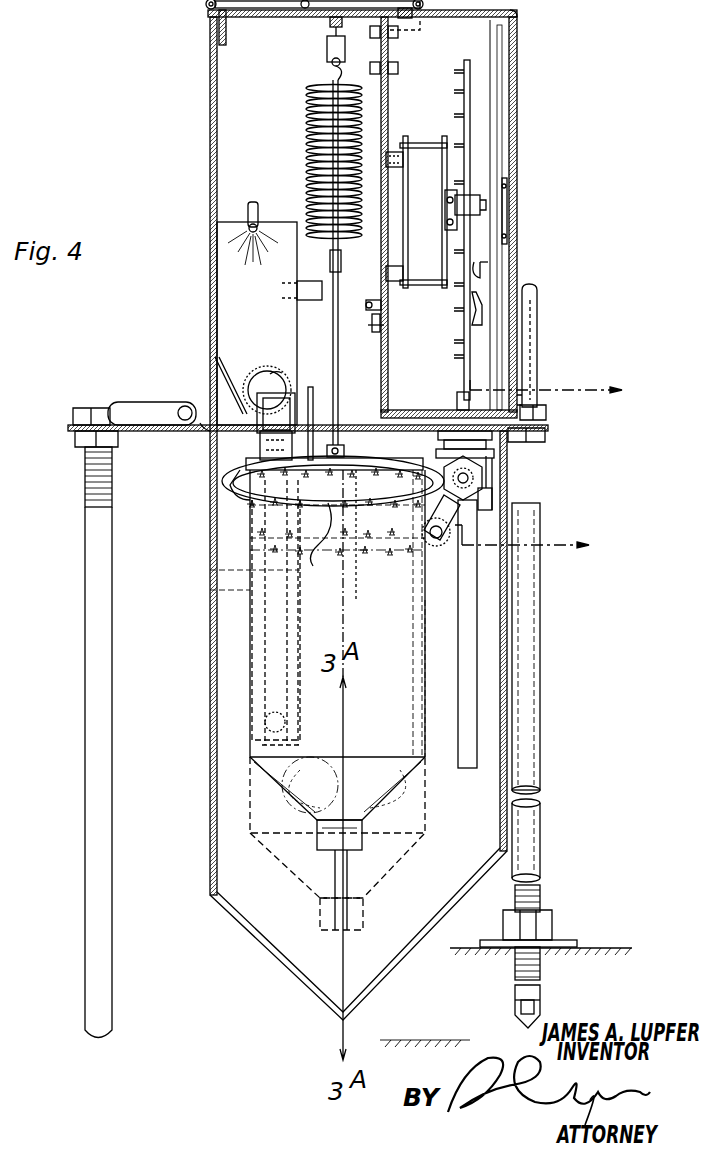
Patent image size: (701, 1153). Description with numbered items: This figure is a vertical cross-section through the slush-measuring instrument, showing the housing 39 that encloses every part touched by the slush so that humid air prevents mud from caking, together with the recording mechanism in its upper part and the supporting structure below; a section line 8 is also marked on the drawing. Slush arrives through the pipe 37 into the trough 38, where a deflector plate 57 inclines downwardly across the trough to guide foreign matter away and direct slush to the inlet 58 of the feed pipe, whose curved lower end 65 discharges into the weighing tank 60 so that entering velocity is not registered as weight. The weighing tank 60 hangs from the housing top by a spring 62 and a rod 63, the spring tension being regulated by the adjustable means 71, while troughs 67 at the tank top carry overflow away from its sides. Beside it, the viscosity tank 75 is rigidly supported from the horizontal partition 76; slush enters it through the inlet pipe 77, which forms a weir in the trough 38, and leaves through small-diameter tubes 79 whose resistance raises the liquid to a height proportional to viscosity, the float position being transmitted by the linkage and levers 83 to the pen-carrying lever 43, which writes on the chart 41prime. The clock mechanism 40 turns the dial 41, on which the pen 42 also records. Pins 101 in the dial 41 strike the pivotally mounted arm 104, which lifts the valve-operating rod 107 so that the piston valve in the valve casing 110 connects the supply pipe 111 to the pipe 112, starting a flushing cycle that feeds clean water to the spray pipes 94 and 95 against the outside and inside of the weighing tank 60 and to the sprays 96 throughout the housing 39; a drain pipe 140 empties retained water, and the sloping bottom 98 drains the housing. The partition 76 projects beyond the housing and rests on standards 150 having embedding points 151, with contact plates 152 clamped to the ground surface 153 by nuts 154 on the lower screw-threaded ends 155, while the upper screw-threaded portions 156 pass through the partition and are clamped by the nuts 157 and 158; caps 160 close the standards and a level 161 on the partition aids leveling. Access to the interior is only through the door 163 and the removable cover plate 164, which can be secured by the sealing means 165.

The section line 8- 8 is at (548, 471).
The pipe 37 is at (238, 370).
The trough 38 is at (235, 286).
The housing 39 is at (211, 190).
The clock mechanism 40 is at (424, 160).
The dial 41 is at (470, 128).
The chart 41prime is at (470, 162).
The pen 42 is at (488, 272).
The pen-carrying lever 43 is at (485, 310).
The deflector plate 57 is at (230, 396).
The inlet 58 is at (273, 378).
The weighing tank 60 is at (425, 692).
The spring 62 is at (305, 118).
The rod 63 is at (314, 392).
The curved lower end 65 is at (262, 690).
The troughs 67 is at (265, 492).
The adjustable means 71 is at (326, 55).
The viscosity tank 75 is at (412, 700).
The horizontal partition 76 is at (210, 432).
The inlet pipe 77 is at (262, 655).
The tubes 79 is at (352, 797).
The linkage and levers 83 is at (382, 312).
The spray pipe 94 is at (338, 410).
The spray pipe 95 is at (359, 556).
The sprays 96 is at (249, 210).
The bottom 98 is at (395, 968).
The pins 101 is at (455, 112).
The pivotally mounted arm 104 is at (480, 204).
The valve-operating rod 107 is at (460, 380).
The valve casing 110 is at (483, 472).
The pipe 111 is at (452, 540).
The pipe 112 is at (492, 485).
The drain pipe 140 is at (468, 683).
The standards 150 is at (112, 573).
The embedding points 151 is at (515, 970).
The contact plates 152 is at (550, 942).
The surface 153 is at (608, 942).
The nuts 154 is at (552, 922).
The lower screw-threaded ends 155 is at (540, 888).
The upper screw-threaded portions 156 is at (85, 467).
The nut 157 is at (75, 440).
The nut 158 is at (73, 412).
The caps 160 is at (537, 352).
The level 161 is at (152, 424).
The door 163 is at (510, 252).
The removable cover plate 164 is at (280, 16).
The sealing means 165 is at (208, 10).